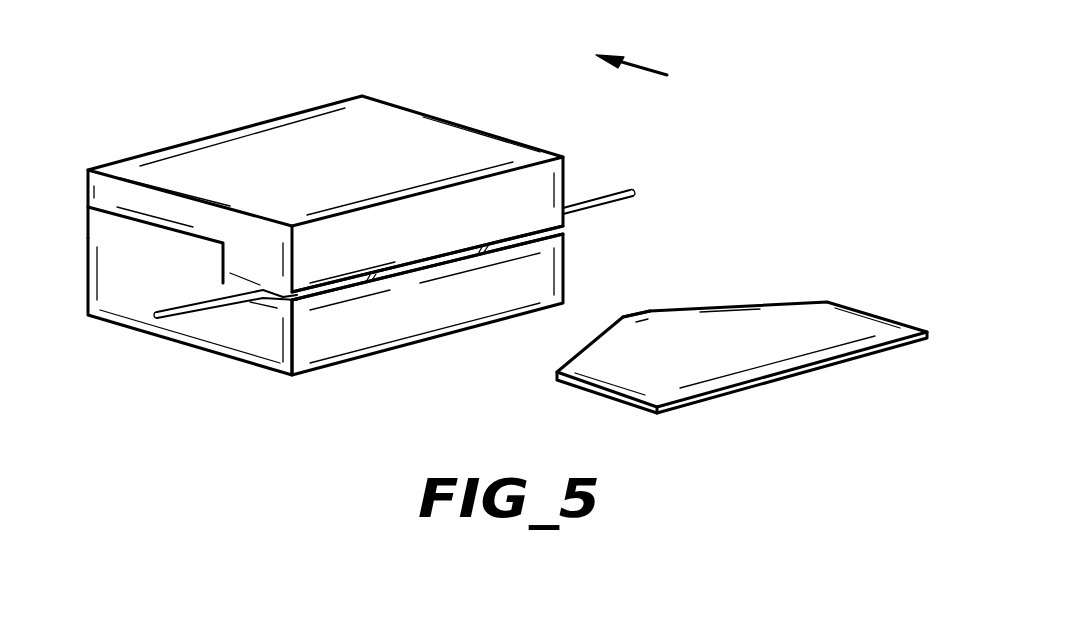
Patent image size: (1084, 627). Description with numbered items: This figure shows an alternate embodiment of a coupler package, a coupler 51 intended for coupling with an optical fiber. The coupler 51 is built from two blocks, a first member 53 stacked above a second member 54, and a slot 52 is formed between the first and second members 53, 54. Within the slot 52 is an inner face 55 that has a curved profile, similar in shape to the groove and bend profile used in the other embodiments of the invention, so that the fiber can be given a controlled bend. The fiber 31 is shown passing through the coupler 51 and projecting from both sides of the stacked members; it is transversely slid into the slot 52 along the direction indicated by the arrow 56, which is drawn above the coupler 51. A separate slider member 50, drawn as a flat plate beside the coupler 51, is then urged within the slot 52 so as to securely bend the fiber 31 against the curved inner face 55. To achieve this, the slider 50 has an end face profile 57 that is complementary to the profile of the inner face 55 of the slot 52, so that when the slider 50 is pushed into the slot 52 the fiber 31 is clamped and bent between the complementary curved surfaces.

The fiber 31 is at (200, 308).
The slider member 50 is at (753, 350).
The coupler 51 is at (765, 163).
The slot 52 is at (320, 300).
The first member 53 is at (403, 152).
The second member 54 is at (468, 303).
The inner face 55 is at (226, 284).
The arrow 56 is at (633, 68).
The end face profile 57 is at (658, 307).